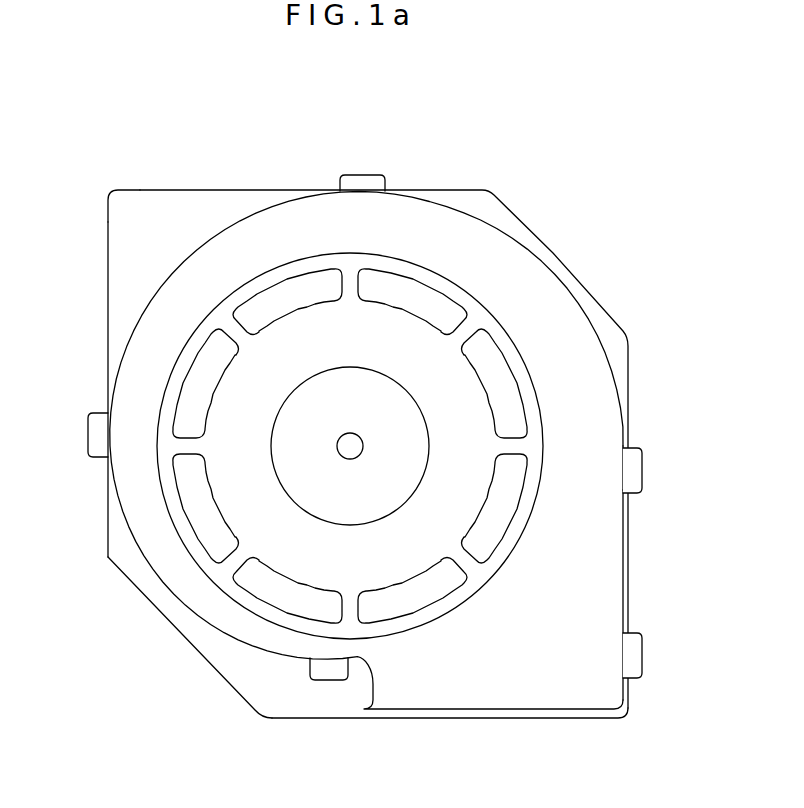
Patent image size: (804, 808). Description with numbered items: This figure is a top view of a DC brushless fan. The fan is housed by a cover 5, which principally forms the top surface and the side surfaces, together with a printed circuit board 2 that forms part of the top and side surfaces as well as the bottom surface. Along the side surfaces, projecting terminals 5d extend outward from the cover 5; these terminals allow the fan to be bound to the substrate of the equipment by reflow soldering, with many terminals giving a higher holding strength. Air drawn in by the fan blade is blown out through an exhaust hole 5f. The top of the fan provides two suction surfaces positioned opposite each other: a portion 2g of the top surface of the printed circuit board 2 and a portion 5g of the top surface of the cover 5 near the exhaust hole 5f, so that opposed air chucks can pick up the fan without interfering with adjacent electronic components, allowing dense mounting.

The printed circuit board 2 is at (290, 707).
The portion of the top surface of the printed circuit board 2g is at (163, 227).
The cover 5 is at (463, 237).
The projecting terminals 5d is at (368, 183).
The exhaust hole 5f is at (527, 713).
The portion of the top surface of the cover 5g is at (582, 630).